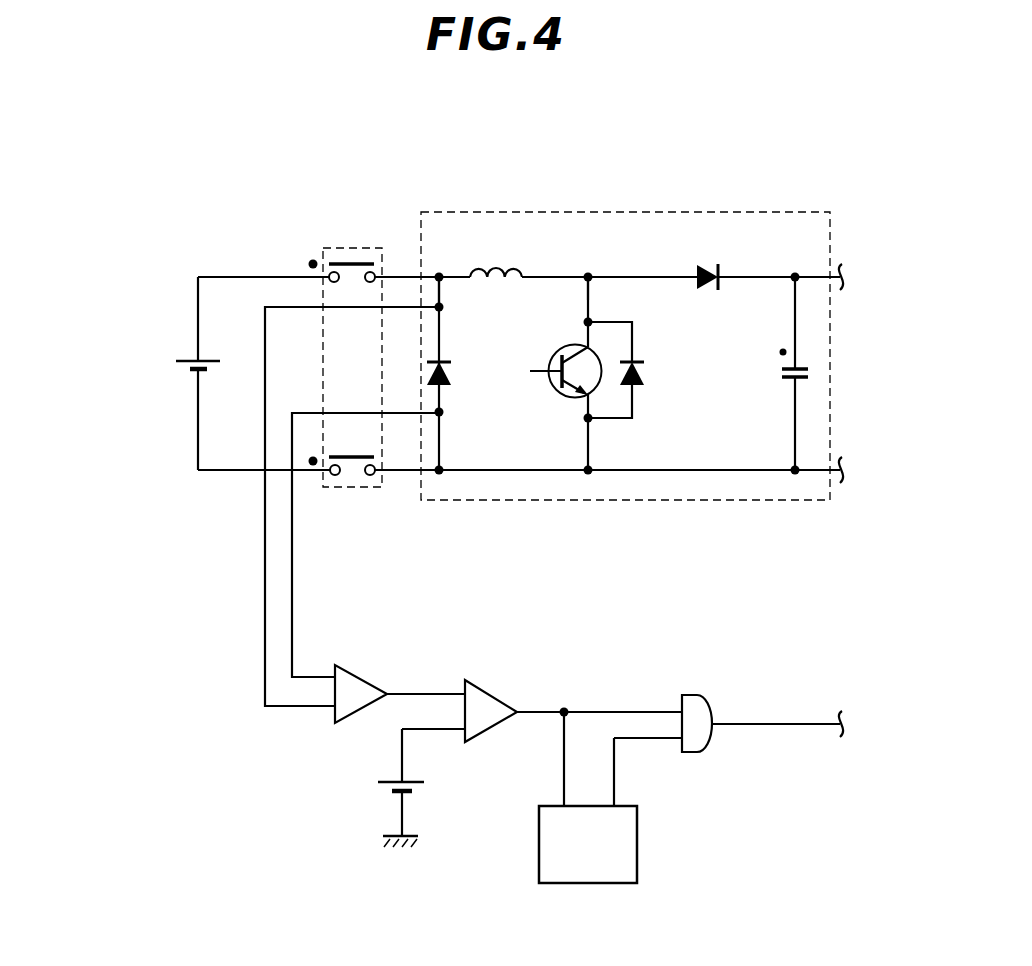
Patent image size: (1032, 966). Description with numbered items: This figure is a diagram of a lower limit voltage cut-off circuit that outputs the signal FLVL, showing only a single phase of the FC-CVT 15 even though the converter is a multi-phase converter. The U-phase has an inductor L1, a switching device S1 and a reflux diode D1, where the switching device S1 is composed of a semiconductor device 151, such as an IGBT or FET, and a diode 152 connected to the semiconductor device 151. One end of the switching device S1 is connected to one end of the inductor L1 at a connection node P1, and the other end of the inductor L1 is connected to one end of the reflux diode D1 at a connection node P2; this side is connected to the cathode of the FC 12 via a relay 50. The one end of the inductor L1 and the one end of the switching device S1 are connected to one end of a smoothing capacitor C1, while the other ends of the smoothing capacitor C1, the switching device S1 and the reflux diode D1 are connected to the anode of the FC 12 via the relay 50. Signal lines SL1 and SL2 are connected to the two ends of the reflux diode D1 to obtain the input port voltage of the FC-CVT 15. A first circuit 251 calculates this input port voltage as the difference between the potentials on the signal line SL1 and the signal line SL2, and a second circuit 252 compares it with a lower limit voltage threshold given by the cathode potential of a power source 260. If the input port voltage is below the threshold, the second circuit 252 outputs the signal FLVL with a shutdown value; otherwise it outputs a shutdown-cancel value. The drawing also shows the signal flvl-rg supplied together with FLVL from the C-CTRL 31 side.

The relay 50 is at (358, 248).
The FC-CVT 15 is at (722, 212).
The FC 12 is at (166, 366).
The connection node P2 is at (439, 275).
The inductor L1 is at (483, 267).
The connection node P1 is at (595, 273).
The reflux diode D1 is at (450, 373).
The semiconductor device 151 is at (565, 397).
The diode 152 is at (638, 386).
The switching device S1 is at (680, 549).
The smoothing capacitor C1 is at (798, 366).
The signal line SL1 is at (265, 530).
The signal line SL2 is at (292, 545).
The first circuit 251 is at (360, 675).
The second circuit 252 is at (478, 685).
The power source 260 is at (385, 778).
The signal FLVL is at (562, 691).
The flash level register signal flvl-rg is at (659, 763).
The C-CTRL 31 is at (639, 852).